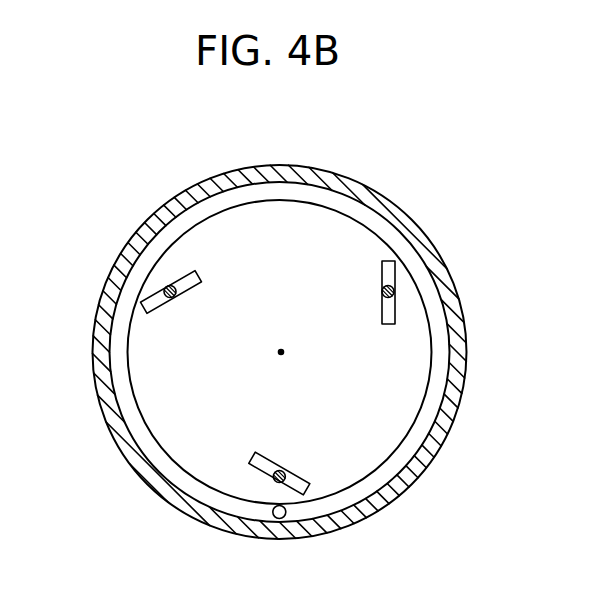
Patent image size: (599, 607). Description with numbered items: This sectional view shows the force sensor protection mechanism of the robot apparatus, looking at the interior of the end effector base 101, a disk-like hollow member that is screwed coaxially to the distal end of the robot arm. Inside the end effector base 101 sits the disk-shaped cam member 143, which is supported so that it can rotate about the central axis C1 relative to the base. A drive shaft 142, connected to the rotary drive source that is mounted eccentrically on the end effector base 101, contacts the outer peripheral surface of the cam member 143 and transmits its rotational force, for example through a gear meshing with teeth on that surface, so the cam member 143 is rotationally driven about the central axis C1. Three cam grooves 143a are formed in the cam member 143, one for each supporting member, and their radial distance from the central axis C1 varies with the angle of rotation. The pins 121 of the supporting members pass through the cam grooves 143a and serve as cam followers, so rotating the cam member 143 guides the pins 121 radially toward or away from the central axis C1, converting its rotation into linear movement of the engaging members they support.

The end effector base 101 is at (455, 287).
The cam member 143 is at (128, 367).
The cam grooves 143a is at (192, 277).
The pin 121 is at (165, 286).
The drive shaft 142 is at (273, 518).
The central axis C1 is at (282, 350).